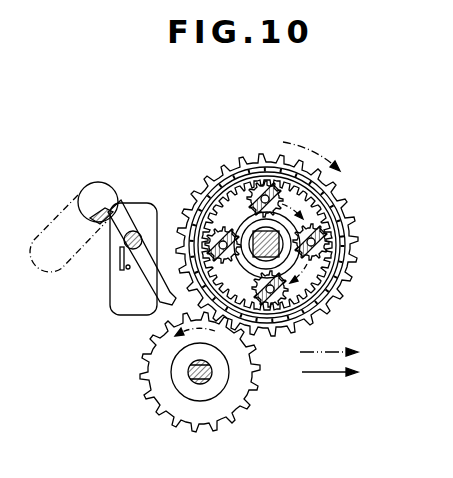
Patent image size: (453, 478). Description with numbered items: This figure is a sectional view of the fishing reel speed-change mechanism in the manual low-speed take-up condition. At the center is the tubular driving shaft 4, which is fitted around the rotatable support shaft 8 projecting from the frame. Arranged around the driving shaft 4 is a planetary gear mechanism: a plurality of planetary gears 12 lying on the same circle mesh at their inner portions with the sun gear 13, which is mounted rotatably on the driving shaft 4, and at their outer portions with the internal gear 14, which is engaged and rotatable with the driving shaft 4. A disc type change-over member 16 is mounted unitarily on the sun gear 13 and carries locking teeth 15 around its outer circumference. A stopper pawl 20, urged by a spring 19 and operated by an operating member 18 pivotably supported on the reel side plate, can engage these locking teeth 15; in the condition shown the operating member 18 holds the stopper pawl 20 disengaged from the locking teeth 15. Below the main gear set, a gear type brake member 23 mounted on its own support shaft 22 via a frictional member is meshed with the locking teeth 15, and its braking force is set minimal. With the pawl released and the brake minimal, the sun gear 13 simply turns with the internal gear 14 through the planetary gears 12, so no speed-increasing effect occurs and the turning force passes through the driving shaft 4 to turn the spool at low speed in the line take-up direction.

The driving shaft 4 is at (292, 254).
The support shaft 8 is at (237, 216).
The planetary gears 12 is at (267, 187).
The sun gear 13 is at (232, 196).
The internal gear 14 is at (194, 199).
The locking teeth 15 is at (247, 153).
The change-over member 16 is at (348, 214).
The operating member 18 is at (46, 222).
The spring 19 is at (118, 266).
The stopper pawl 20 is at (167, 299).
The support shaft 22 is at (192, 371).
The gear type brake member 23 is at (170, 407).